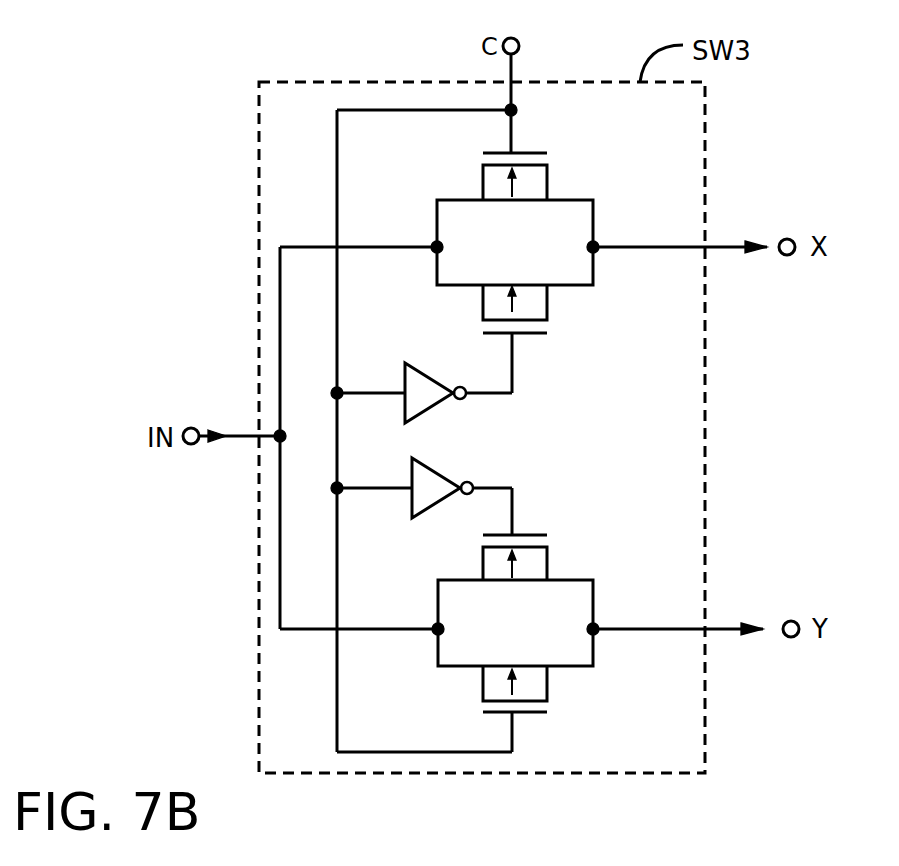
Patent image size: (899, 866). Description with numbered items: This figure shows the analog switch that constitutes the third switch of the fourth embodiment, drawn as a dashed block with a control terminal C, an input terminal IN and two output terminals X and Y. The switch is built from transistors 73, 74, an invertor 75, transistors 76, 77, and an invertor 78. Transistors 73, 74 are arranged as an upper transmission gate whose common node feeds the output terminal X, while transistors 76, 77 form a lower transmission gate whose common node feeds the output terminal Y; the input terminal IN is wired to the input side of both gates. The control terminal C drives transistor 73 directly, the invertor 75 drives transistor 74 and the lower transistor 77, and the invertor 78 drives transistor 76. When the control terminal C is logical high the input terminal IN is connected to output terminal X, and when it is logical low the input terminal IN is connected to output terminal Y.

The transistor 73 is at (532, 148).
The transistor 74 is at (530, 335).
The invertor 75 is at (430, 405).
The transistor 76 is at (527, 530).
The transistor 77 is at (528, 717).
The invertor 78 is at (445, 472).